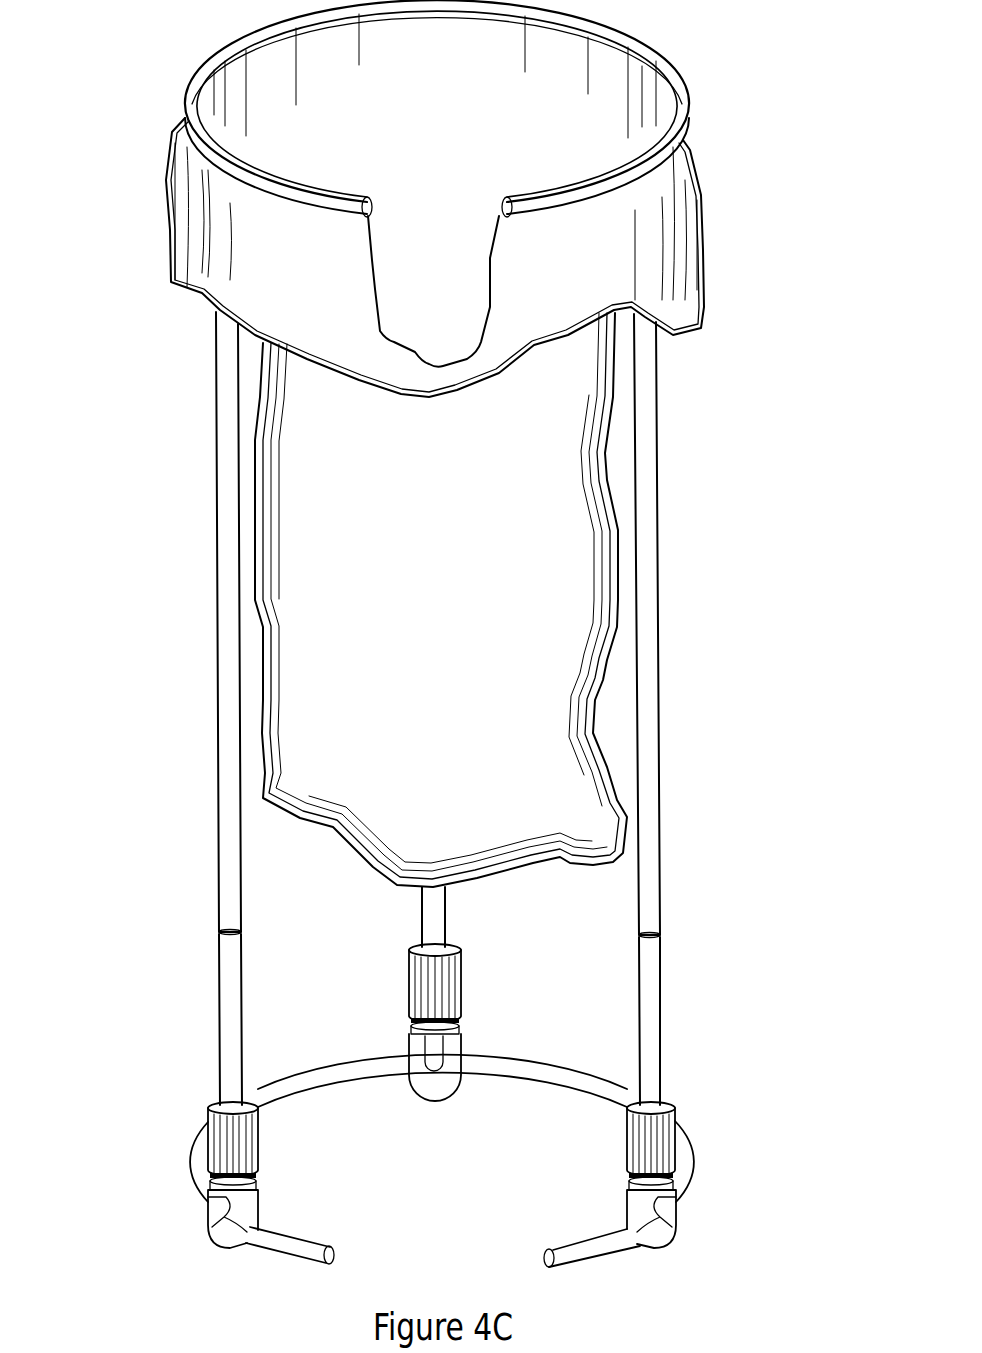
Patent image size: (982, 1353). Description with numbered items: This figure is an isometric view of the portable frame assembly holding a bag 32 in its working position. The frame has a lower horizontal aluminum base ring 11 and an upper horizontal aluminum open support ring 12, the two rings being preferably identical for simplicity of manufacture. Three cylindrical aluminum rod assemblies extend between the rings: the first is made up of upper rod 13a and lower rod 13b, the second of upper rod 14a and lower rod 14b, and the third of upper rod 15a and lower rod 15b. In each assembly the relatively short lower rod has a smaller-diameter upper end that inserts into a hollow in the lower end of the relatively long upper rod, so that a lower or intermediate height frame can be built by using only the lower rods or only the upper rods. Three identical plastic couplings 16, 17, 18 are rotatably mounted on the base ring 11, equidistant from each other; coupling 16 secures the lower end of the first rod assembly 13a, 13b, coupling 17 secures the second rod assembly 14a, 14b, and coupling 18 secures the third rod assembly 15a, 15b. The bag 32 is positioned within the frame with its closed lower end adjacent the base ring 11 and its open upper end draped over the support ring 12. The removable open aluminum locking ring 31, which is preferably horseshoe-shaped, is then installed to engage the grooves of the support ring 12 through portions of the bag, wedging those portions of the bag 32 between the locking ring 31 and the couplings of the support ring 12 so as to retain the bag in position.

The base ring 11 is at (608, 1260).
The support ring 12 is at (687, 68).
The upper rod 13a is at (217, 625).
The lower rod 13b is at (220, 1006).
The upper rod 14a is at (449, 925).
The lower rod 14b is at (507, 917).
The upper rod 15a is at (665, 607).
The lower rod 15b is at (667, 1007).
The coupling 16 is at (265, 1150).
The coupling 17 is at (456, 1002).
The coupling 18 is at (626, 1158).
The locking ring 31 is at (195, 140).
The bag 32 is at (440, 513).